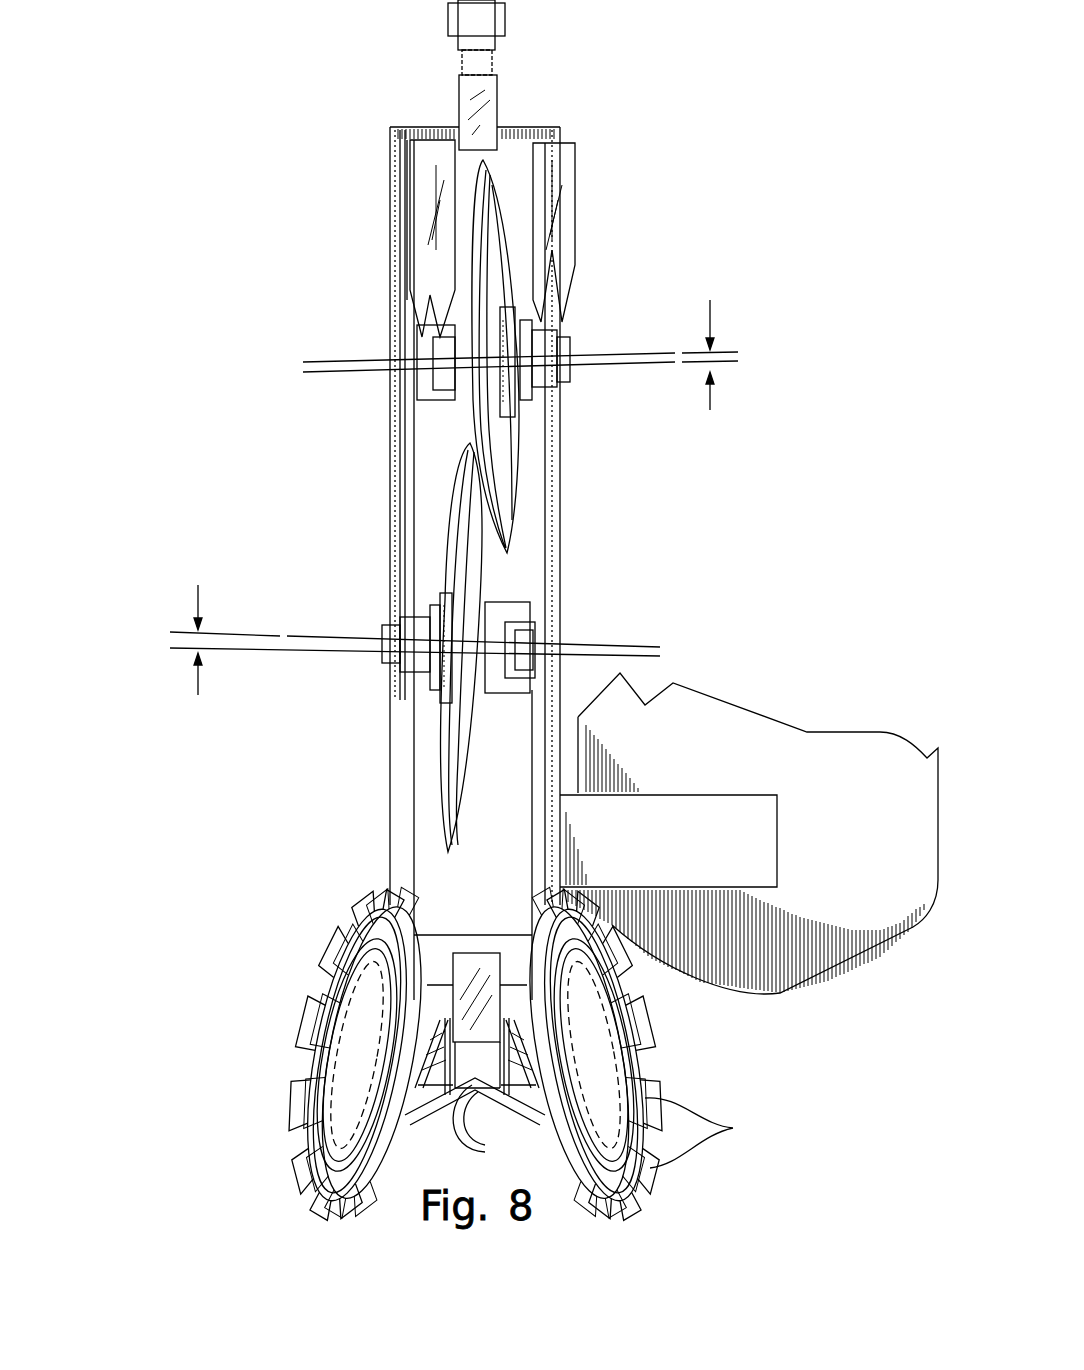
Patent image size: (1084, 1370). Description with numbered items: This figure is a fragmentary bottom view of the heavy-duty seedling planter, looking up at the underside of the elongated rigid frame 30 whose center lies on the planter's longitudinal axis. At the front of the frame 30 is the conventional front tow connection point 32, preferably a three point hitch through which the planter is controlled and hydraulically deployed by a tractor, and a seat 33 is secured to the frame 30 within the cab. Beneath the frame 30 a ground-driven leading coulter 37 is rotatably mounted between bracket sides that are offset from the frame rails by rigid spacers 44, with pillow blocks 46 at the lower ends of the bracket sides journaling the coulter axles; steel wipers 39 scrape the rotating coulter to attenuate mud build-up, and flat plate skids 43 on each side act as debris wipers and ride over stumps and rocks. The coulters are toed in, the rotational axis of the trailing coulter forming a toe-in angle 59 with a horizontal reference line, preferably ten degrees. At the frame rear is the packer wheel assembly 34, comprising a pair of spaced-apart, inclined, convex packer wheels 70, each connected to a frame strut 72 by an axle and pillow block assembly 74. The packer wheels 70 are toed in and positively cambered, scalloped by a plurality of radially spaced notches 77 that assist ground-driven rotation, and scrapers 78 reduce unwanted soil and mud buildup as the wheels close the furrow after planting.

The frame 30 is at (430, 893).
The front tow connection point 32 is at (490, 108).
The seat 33 is at (862, 752).
The packer wheel assembly 34 is at (790, 1057).
The leading coulter 37 is at (500, 255).
The steel wipers 39 is at (518, 430).
The skids 43 is at (417, 173).
The spacers 44 is at (420, 330).
The pillow block 46 is at (532, 637).
The toe-in angle 59 is at (738, 352).
The packer wheels 70 is at (305, 1058).
The frame strut 72 is at (473, 960).
The pillow block assembly 74 is at (428, 1105).
The notches 77 is at (711, 1133).
The scrapers 78 is at (489, 1127).